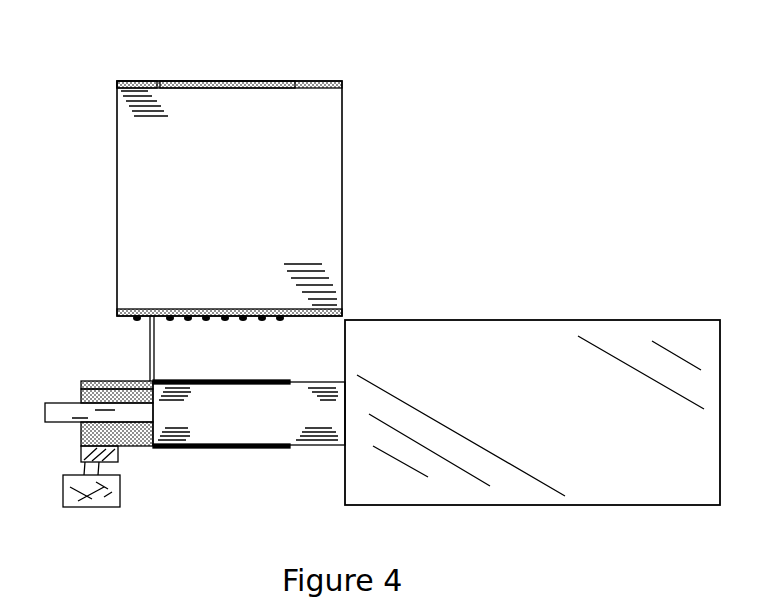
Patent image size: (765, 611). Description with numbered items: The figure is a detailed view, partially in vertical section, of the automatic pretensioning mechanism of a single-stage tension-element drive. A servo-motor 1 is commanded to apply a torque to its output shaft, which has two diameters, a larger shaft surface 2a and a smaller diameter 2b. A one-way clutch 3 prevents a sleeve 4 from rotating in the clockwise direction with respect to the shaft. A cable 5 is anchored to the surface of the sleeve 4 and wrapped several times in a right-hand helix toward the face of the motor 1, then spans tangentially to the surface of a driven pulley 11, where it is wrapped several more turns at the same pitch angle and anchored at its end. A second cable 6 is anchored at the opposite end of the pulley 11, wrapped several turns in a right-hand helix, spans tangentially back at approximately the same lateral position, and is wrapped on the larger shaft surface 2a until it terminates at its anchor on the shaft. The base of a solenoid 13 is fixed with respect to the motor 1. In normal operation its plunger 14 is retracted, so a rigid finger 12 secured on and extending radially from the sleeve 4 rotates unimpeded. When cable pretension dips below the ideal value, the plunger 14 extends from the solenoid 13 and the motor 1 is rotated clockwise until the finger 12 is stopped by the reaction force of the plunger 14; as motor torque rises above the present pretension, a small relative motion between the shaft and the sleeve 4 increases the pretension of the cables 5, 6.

The servo-motor 1 is at (477, 341).
The larger shaft surface 2a is at (44, 413).
The shaft diameter 2b is at (328, 449).
The one-way clutch 3 is at (87, 395).
The sleeve 4 is at (100, 383).
The cable 5 is at (290, 77).
The second cable 6 is at (146, 78).
The driven pulley 11 is at (310, 144).
The rigid finger 12 is at (78, 452).
The solenoid 13 is at (62, 490).
The plunger 14 is at (80, 469).